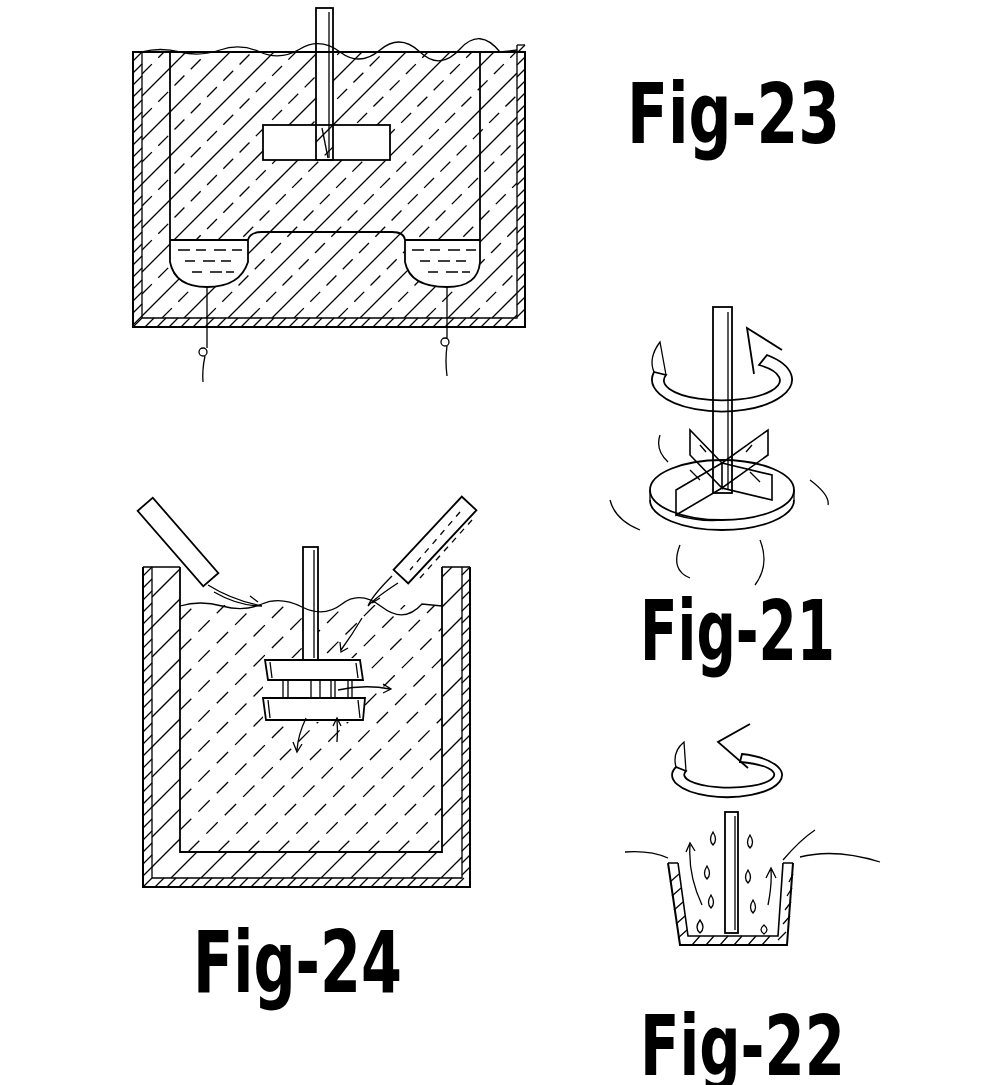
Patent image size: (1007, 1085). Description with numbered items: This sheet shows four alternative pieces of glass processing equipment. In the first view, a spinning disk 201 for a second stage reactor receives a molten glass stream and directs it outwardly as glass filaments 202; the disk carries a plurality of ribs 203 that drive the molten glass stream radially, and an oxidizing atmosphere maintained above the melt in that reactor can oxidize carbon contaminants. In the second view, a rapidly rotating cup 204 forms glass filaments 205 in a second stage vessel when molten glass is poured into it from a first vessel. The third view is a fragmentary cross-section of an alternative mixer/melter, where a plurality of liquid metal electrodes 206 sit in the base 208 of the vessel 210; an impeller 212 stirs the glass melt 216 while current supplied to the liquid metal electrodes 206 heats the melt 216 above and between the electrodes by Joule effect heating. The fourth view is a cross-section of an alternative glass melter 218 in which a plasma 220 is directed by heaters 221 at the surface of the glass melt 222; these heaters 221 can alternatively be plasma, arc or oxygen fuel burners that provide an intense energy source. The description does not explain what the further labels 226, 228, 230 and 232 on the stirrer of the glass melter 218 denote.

In FIG. 21, the spinning disk 201 is at (770, 485).
In FIG. 21, the glass filaments 202 is at (766, 562).
In FIG. 21, the ribs 203 is at (680, 520).
In FIG. 22, the rotating cup 204 is at (793, 905).
In FIG. 22, the glass filaments 205 is at (845, 853).
In FIG. 23, the liquid metal electrodes 206 is at (447, 250).
In FIG. 23, the base 208 is at (525, 258).
In FIG. 23, the vessel 210 is at (525, 62).
In FIG. 23, the impeller 212 is at (360, 130).
In FIG. 23, the glass melt 216 is at (182, 139).
In FIG. 24, the glass melter 218 is at (470, 652).
In FIG. 24, the plasma 220 is at (234, 592).
In FIG. 24, the heaters 221 is at (163, 512).
In FIG. 24, the glass melt 222 is at (326, 600).
In FIG. 24, the flow of melt 226 is at (298, 732).
In FIG. 24, the upper disk 228 is at (340, 668).
In FIG. 24, the lower disk 230 is at (348, 705).
In FIG. 24, the gap between disks 232 is at (282, 688).